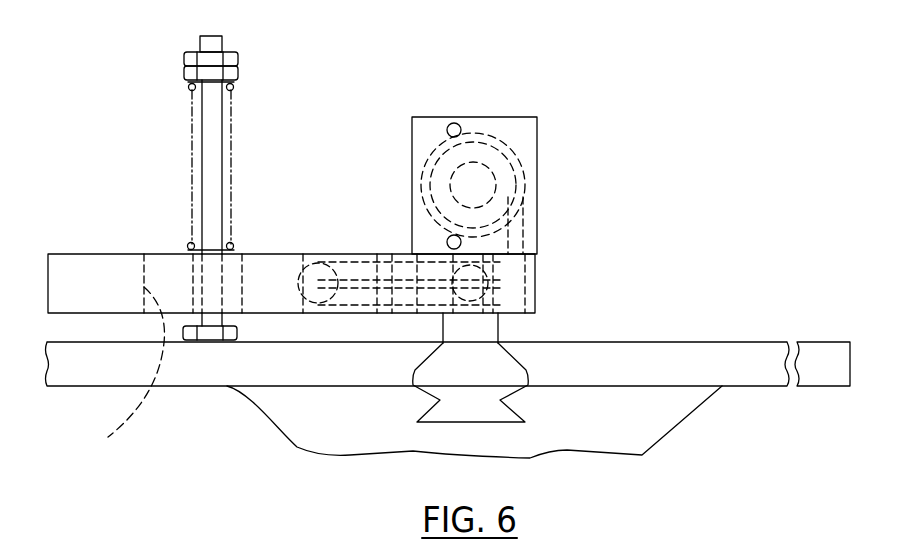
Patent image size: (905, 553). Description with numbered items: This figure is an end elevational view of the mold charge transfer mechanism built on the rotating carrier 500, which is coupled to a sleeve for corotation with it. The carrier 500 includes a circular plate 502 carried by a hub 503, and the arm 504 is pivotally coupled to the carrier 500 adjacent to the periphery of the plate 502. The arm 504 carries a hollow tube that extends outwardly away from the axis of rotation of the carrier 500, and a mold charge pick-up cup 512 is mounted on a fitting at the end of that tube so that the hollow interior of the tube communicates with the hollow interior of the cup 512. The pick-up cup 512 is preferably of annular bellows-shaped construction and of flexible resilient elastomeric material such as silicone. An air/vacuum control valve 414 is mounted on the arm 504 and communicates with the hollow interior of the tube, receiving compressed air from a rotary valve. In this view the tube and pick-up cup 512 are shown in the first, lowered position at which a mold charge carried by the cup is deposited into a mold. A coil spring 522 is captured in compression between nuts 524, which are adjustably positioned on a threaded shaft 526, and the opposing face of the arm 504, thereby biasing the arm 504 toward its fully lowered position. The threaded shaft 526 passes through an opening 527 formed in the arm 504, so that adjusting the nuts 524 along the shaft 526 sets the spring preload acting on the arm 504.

The air/vacuum control valve 414 is at (540, 193).
The carrier 500 is at (752, 343).
The circular plate 502 is at (712, 342).
The hub 503 is at (662, 426).
The arm 504 is at (92, 252).
The mold charge pick-up cup 512 is at (430, 438).
The coil spring 522 is at (188, 87).
The nuts 524 is at (184, 72).
The threaded shaft 526 is at (210, 163).
The opening 527 is at (117, 374).